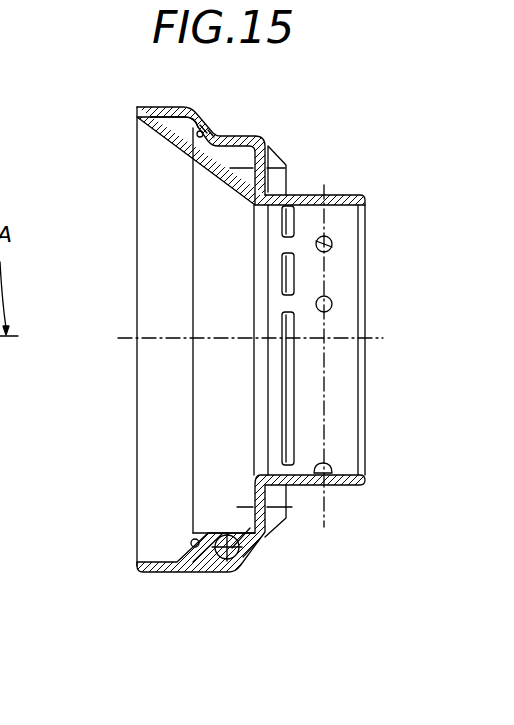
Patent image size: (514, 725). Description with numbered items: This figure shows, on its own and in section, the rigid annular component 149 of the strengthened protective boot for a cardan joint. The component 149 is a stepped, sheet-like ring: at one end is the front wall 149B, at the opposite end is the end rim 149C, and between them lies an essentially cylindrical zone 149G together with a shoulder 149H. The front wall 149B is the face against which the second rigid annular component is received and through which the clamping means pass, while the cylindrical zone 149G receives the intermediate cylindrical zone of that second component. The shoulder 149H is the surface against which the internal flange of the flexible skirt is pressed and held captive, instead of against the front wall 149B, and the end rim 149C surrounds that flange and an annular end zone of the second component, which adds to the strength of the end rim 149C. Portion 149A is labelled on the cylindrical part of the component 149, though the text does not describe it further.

The rigid annular component 149 is at (265, 125).
The cylindrical sleeve portion 149A is at (342, 196).
The front wall 149B is at (287, 172).
The end rim 149C is at (172, 106).
The cylindrical zone 149G is at (218, 137).
The shoulder 149H is at (186, 124).